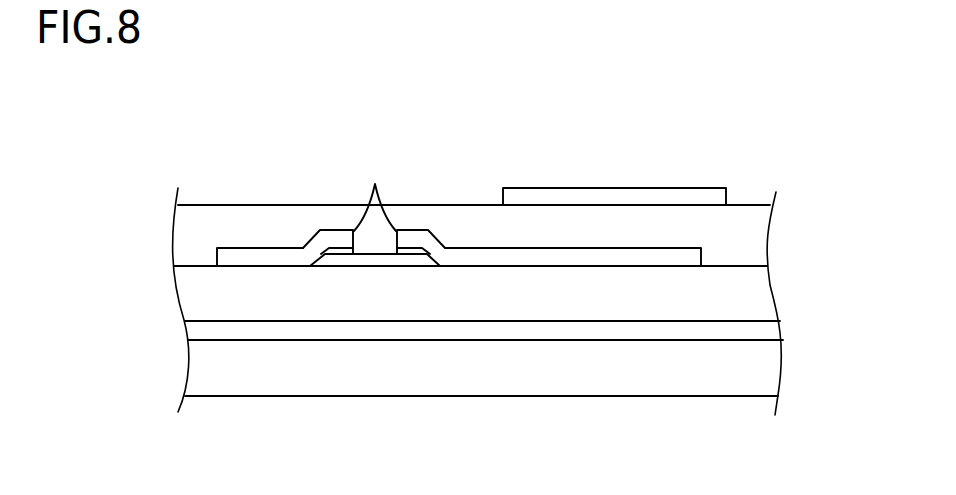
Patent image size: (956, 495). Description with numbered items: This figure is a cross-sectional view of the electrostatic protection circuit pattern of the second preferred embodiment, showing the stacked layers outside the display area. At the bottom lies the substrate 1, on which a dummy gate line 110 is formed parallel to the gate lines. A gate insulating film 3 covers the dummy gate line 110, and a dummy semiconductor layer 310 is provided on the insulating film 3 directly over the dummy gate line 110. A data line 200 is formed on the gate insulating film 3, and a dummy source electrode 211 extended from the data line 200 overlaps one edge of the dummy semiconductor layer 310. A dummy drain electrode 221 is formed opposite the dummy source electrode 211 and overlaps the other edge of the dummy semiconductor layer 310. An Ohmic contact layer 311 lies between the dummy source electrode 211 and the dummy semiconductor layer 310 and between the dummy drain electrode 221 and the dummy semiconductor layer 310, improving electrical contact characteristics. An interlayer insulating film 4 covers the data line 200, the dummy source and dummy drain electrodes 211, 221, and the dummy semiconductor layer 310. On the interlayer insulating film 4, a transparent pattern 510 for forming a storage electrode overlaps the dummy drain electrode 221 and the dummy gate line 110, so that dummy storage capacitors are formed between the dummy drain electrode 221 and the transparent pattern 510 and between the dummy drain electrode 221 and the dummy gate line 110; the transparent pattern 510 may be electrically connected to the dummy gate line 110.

The substrate 1 is at (770, 373).
The dummy gate line 110 is at (773, 335).
The gate insulating film 3 is at (763, 295).
The interlayer insulating film 4 is at (757, 232).
The data line 200 is at (232, 255).
The dummy source electrode 211 is at (337, 238).
The dummy drain electrode 221 is at (427, 237).
The dummy semiconductor layer 310 is at (373, 258).
The Ohmic contact layer 311 is at (384, 189).
The transparent pattern 510 is at (608, 197).